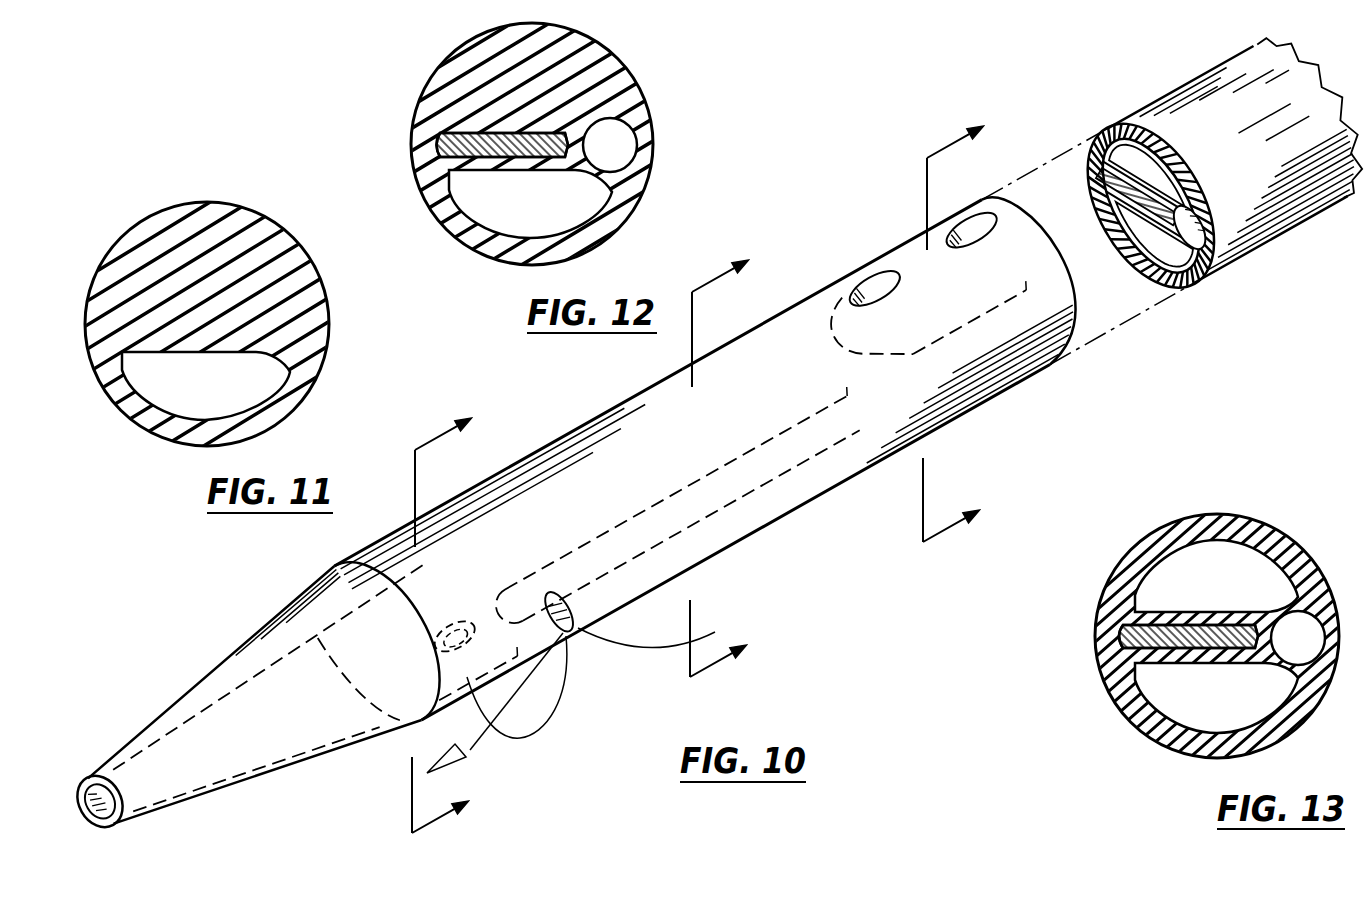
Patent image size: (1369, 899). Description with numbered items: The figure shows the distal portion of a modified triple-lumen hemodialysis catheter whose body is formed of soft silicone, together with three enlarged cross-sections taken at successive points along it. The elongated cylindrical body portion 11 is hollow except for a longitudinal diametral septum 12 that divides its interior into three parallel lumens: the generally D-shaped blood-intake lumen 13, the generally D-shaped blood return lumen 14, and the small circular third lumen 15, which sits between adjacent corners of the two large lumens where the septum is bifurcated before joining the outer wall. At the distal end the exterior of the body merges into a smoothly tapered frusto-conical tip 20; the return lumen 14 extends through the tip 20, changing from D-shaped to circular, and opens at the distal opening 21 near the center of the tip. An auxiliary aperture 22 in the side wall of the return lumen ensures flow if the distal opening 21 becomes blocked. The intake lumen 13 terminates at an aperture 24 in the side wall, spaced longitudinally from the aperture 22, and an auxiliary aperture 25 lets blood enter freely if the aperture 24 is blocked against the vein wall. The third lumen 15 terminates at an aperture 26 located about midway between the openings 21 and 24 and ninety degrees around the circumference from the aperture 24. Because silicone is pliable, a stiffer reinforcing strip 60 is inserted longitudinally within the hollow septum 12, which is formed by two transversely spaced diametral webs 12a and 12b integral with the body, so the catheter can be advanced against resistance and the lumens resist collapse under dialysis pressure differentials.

In FIG. 10, the cylindrical body portion 11 is at (1062, 437).
In FIG. 11, the cylindrical body portion 11 is at (113, 412).
In FIG. 12, the cylindrical body portion 11 is at (442, 233).
In FIG. 13, the cylindrical body portion 11 is at (1128, 722).
In FIG. 10, the septum 12 is at (741, 459).
In FIG. 10, the blood-intake lumen 13 is at (975, 325).
In FIG. 13, the blood-intake lumen 13 is at (1224, 591).
In FIG. 11, the blood return lumen 14 is at (185, 398).
In FIG. 12, the blood return lumen 14 is at (535, 220).
In FIG. 13, the blood return lumen 14 is at (1224, 713).
In FIG. 12, the third lumen 15 is at (598, 157).
In FIG. 13, the third lumen 15 is at (1286, 650).
In FIG. 10, the frusto-conical tip 20 is at (232, 655).
In FIG. 10, the distal opening 21 is at (85, 810).
In FIG. 10, the auxiliary aperture 22 is at (498, 684).
In FIG. 10, the aperture 24 is at (850, 283).
In FIG. 10, the auxiliary aperture 25 is at (995, 242).
In FIG. 10, the aperture 26 is at (577, 613).
In FIG. 12, the reinforcing strip 60 is at (428, 152).
In FIG. 13, the reinforcing strip 60 is at (1117, 640).
In FIG. 13, the diametral web 12a is at (1152, 612).
In FIG. 12, the diametral web 12b is at (467, 176).
In FIG. 13, the diametral web 12b is at (1152, 665).